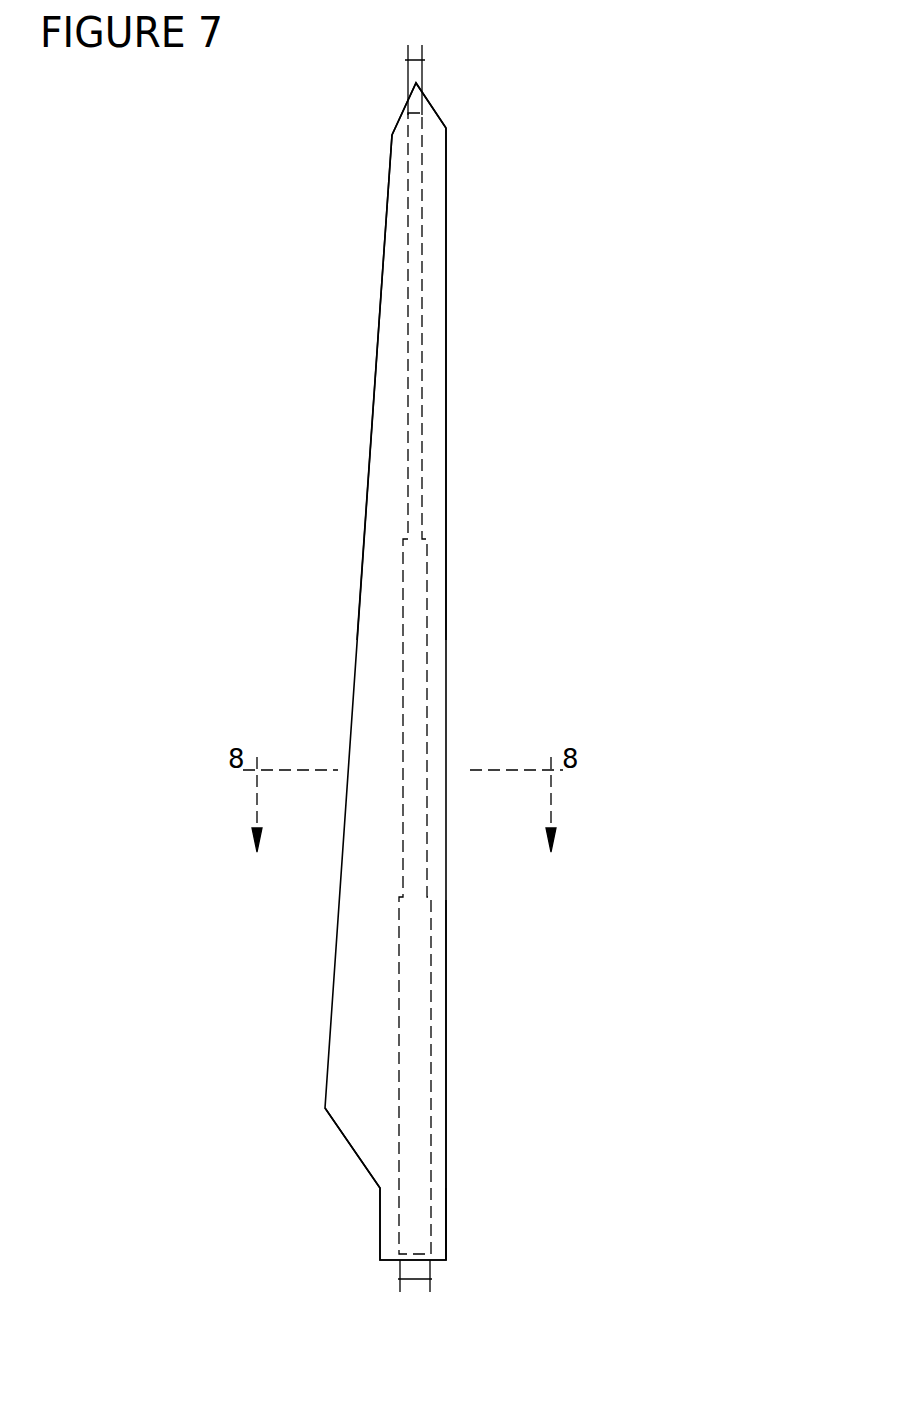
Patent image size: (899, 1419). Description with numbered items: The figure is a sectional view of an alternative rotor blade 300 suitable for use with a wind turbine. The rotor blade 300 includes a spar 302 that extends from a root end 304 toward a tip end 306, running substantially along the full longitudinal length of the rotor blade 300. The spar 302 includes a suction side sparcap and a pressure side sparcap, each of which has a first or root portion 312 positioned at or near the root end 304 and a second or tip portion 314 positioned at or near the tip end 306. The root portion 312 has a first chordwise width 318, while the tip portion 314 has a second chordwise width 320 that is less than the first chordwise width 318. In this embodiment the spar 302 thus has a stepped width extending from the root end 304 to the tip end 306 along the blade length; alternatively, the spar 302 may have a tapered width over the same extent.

The rotor blade 300 is at (594, 165).
The spar 302 is at (427, 682).
The root end 304 is at (446, 1218).
The tip end 306 is at (436, 112).
The root portion 312 is at (463, 1170).
The tip portion 314 is at (461, 178).
The first chordwise width 318 is at (415, 1279).
The second chordwise width 320 is at (415, 60).